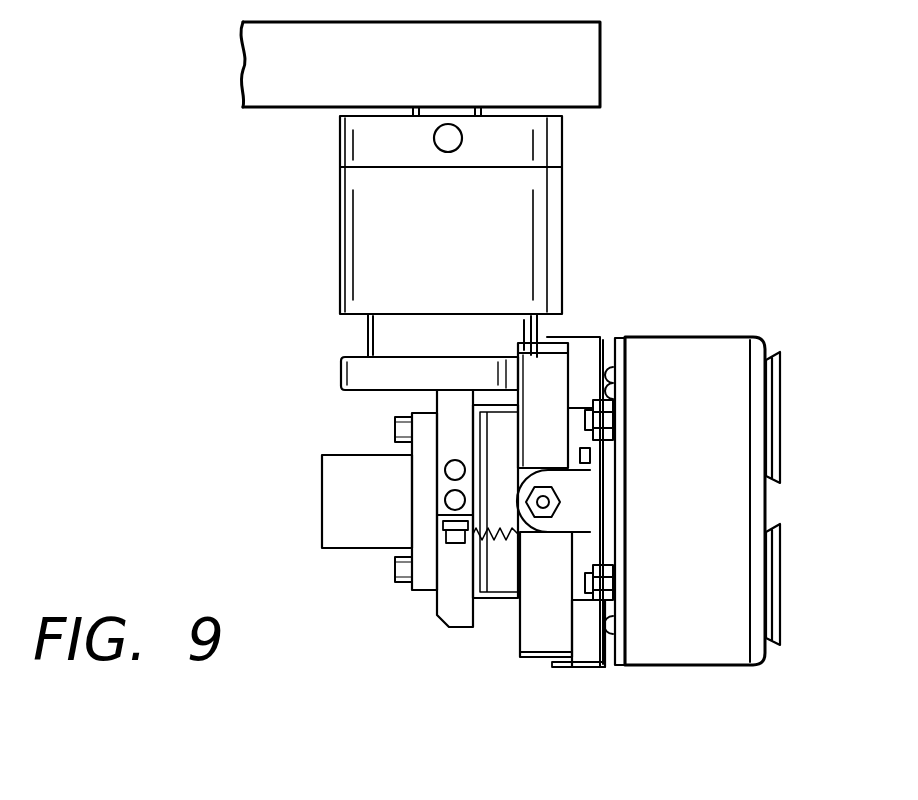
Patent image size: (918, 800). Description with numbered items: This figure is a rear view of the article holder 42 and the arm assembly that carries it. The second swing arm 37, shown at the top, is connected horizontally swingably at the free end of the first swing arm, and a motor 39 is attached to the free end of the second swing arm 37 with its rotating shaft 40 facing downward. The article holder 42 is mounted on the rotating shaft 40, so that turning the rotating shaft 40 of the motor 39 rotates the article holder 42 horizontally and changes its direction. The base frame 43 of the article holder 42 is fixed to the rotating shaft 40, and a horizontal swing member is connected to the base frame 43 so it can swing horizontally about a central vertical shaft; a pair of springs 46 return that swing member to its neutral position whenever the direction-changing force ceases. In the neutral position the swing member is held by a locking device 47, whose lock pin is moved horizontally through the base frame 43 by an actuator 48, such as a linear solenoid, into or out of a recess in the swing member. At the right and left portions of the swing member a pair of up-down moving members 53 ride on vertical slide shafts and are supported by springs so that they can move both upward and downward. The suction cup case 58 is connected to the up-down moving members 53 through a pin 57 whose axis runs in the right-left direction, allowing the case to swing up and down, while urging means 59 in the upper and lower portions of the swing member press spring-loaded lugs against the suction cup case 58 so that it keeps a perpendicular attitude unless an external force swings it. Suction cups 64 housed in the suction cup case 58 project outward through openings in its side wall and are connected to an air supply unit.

The second swing arm 37 is at (290, 92).
The motor 39 is at (378, 222).
The rotating shaft 40 is at (398, 336).
The article holder 42 is at (685, 443).
The base frame 43 is at (447, 605).
The springs 46 is at (492, 553).
The locking device 47 is at (350, 467).
The actuator 48 is at (370, 537).
The up-down moving members 53 is at (538, 640).
The pin 57 is at (552, 500).
The suction cup case 58 is at (711, 640).
The urging means 59 is at (588, 355).
The suction cups 64 is at (776, 560).